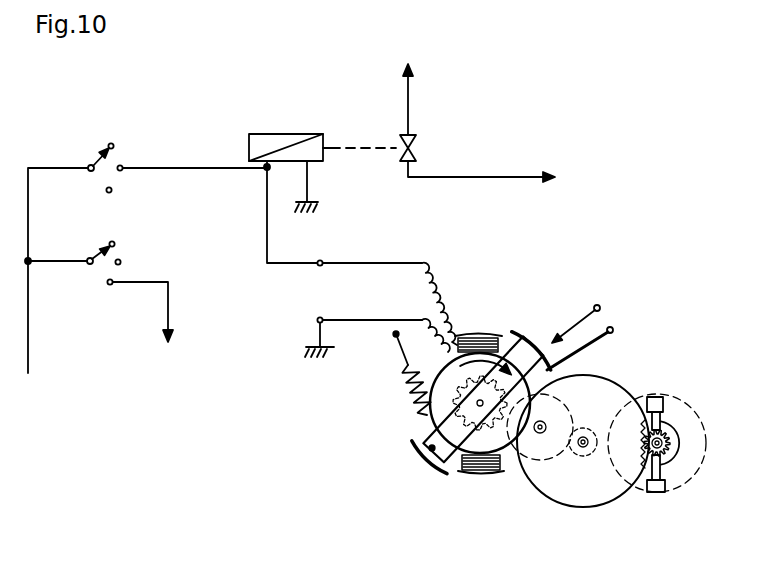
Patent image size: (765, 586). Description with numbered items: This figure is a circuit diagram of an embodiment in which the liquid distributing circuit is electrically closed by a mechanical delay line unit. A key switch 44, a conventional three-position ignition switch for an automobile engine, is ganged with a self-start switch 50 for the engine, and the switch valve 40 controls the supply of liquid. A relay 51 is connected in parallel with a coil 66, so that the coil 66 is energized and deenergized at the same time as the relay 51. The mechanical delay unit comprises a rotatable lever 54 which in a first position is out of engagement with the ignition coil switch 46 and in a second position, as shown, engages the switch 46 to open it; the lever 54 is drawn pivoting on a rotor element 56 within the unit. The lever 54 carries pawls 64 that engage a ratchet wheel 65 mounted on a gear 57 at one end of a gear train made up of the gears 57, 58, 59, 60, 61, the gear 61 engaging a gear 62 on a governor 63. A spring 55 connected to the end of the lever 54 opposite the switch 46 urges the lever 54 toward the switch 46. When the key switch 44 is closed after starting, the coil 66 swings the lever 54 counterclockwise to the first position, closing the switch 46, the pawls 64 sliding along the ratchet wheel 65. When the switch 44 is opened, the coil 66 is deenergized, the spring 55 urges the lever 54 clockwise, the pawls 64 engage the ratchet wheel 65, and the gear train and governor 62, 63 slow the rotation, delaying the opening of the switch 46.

The switch valve 40 is at (414, 140).
The key switch 44 is at (90, 164).
The switch 46 is at (587, 348).
The self-start switch 50 is at (98, 264).
The relay 51 is at (253, 136).
The rotatable lever 54 is at (525, 350).
The spring 55 is at (422, 422).
The rotor 56 is at (480, 362).
The gear 57 is at (475, 445).
The gear 58 is at (537, 460).
The gear 59 is at (549, 462).
The gear 60 is at (585, 456).
The gear 61 is at (608, 488).
The gear 62 is at (668, 456).
The governor 63 is at (663, 400).
The pawls 64 is at (420, 418).
The ratchet wheel 65 is at (487, 432).
The coil 66 is at (470, 335).